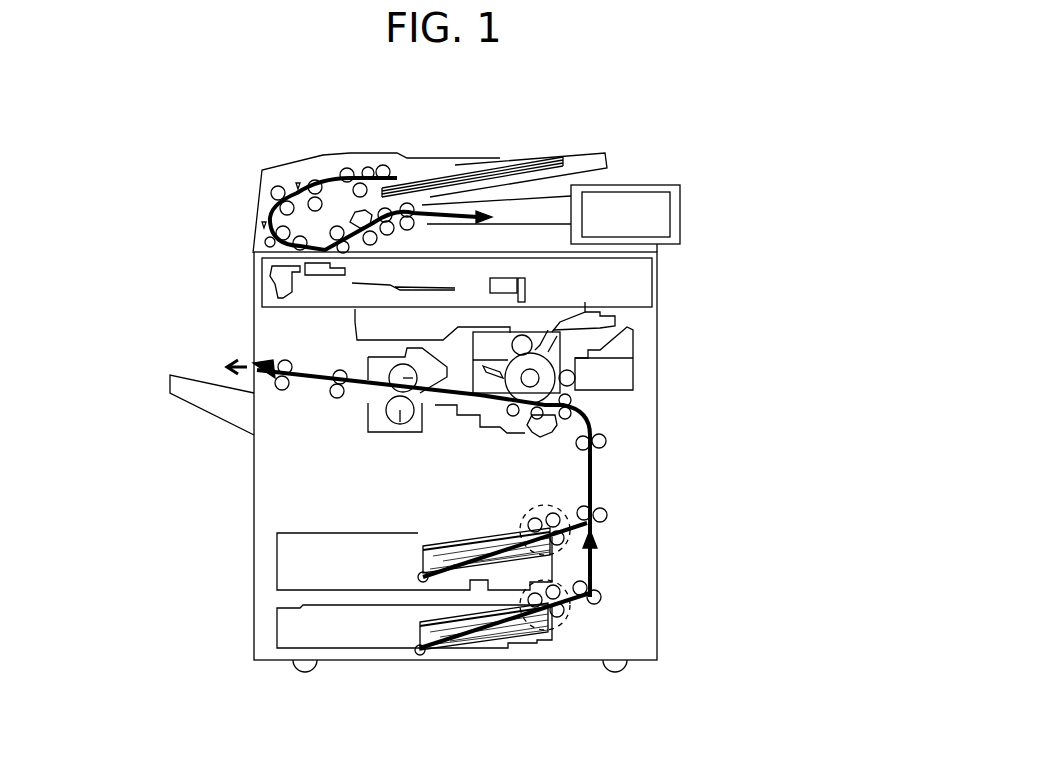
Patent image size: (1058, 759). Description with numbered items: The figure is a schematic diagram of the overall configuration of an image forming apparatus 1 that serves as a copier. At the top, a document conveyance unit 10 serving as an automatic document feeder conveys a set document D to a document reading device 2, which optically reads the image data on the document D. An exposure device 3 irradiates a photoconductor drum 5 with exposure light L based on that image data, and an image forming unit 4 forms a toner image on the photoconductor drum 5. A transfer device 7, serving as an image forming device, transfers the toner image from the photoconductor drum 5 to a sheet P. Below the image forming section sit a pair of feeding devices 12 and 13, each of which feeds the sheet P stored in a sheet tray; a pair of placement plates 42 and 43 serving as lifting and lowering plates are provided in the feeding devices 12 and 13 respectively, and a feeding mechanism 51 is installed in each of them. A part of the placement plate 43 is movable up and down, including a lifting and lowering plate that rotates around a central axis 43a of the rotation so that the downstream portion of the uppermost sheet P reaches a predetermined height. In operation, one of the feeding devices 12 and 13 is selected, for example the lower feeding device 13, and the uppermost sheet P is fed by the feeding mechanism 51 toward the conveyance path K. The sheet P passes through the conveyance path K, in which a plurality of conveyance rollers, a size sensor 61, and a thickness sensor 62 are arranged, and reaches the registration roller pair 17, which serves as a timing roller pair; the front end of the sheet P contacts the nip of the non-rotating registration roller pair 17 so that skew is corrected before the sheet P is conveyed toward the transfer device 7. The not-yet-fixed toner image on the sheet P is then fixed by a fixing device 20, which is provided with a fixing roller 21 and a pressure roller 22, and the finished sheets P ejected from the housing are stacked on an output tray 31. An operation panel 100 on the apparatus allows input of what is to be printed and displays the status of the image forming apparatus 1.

The image forming apparatus 1 is at (622, 160).
The document reading device 2 is at (266, 295).
The exposure device 3 is at (588, 318).
The image forming unit 4 is at (638, 338).
The photoconductor drum 5 is at (530, 368).
The transfer device 7 is at (533, 428).
The document conveyance unit 10 is at (370, 157).
The feeding device 12 is at (274, 567).
The feeding device 13 is at (368, 643).
The registration roller pair 17 is at (571, 400).
The fixing device 20 is at (361, 414).
The fixing roller 21 is at (368, 363).
The pressure roller 22 is at (402, 417).
The output tray 31 is at (218, 410).
The placement plate 42 is at (500, 575).
The placement plate 43 is at (497, 632).
The central axis of the rotation 43a is at (418, 657).
The feeding mechanism 51 is at (528, 515).
The size sensor 61 is at (594, 493).
The thickness sensor 62 is at (594, 463).
The operation panel 100 is at (680, 216).
The document D is at (550, 160).
The exposure light L is at (562, 315).
The conveyance path K is at (587, 483).
The sheet P is at (425, 568).